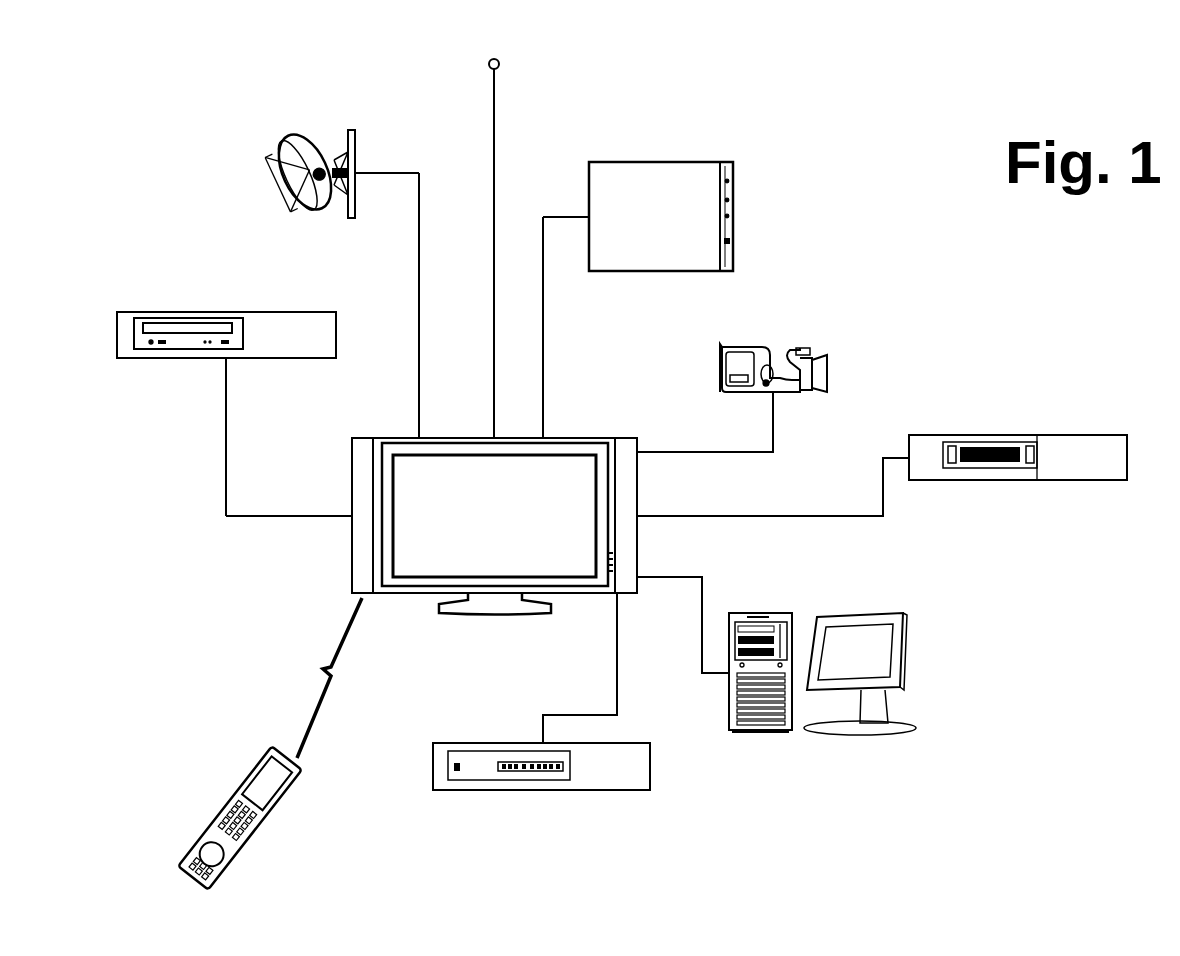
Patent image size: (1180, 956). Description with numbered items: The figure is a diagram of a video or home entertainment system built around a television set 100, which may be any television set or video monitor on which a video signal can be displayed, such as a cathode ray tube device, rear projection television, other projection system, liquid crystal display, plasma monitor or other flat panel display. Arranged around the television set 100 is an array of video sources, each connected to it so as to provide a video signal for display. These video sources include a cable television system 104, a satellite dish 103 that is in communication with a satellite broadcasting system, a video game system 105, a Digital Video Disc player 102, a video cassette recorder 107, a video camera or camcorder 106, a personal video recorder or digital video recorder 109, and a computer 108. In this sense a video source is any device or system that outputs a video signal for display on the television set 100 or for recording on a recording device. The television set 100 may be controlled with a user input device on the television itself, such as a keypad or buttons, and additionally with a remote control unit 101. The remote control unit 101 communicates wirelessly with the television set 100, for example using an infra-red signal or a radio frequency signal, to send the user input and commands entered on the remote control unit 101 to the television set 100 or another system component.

The television set 100 is at (364, 552).
The remote control unit 101 is at (237, 792).
The Digital Video Disc (DVD) player 102 is at (185, 358).
The satellite dish 103 is at (305, 158).
The cable television system 104 is at (500, 231).
The video game system 105 is at (672, 186).
The video camera or camcorder 106 is at (772, 367).
The video cassette recorder (VCR) 107 is at (1035, 441).
The computer 108 is at (785, 628).
The personal video recorder (PVR) or digital video recorder (DVR) 109 is at (599, 778).